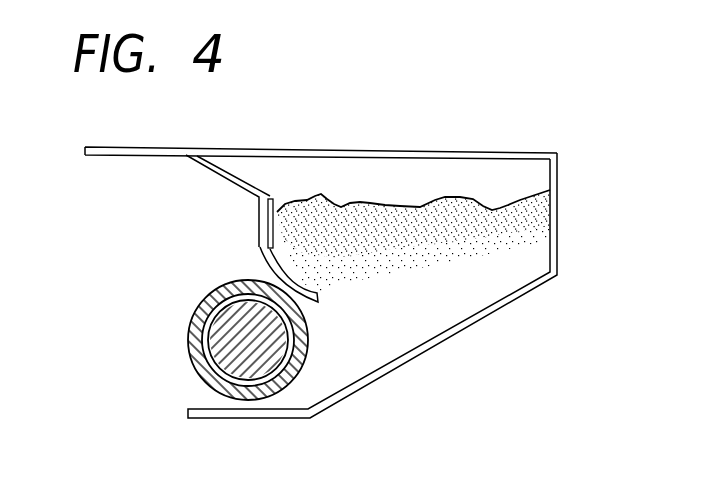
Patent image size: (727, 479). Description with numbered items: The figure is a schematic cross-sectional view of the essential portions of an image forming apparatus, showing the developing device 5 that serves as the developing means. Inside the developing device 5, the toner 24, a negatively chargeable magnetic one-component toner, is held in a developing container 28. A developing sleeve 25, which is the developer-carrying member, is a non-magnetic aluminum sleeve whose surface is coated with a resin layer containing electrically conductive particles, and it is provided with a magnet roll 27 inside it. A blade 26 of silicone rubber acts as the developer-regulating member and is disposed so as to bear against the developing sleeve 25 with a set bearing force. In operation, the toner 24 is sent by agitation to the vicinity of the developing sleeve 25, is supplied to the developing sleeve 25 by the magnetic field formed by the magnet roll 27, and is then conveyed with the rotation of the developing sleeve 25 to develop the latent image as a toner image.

The developing device 5 is at (387, 387).
The developing container 28 is at (357, 150).
The blade 26 is at (259, 263).
The toner 24 is at (507, 206).
The magnet roll 27 is at (187, 341).
The developing sleeve 25 is at (226, 357).